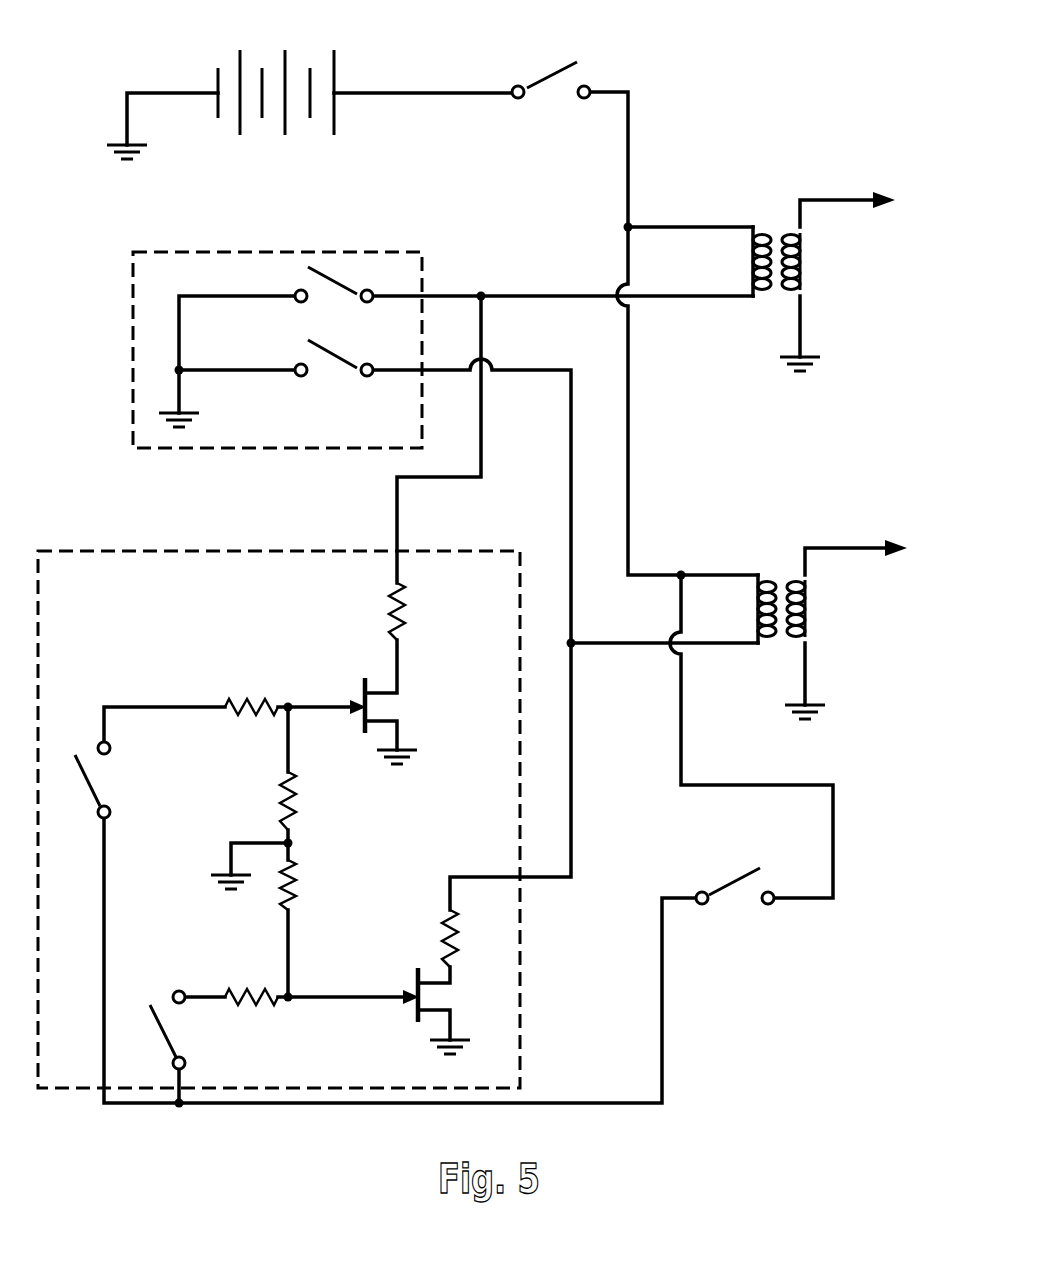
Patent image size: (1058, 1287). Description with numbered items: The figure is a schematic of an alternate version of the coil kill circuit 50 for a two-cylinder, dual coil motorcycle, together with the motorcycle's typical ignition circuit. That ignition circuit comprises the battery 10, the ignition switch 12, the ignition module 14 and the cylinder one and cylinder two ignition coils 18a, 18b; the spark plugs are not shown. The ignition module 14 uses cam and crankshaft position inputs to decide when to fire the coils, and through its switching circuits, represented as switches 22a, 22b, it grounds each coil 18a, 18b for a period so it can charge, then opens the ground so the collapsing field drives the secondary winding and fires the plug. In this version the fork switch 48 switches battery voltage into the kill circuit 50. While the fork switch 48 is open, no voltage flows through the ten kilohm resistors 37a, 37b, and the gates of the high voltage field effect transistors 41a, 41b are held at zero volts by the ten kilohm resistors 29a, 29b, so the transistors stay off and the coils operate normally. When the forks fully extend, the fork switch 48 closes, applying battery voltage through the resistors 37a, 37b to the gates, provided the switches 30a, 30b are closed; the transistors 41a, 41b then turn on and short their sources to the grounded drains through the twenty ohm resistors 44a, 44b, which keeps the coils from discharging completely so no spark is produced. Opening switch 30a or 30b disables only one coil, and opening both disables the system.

The battery 10 is at (285, 50).
The ignition switch 12 is at (560, 89).
The ignition module 14 is at (118, 273).
The switch 22a is at (331, 302).
The switch 22b is at (328, 372).
The cylinder #1 ignition coil 18a is at (802, 251).
The cylinder #2 ignition coil 18b is at (808, 612).
The coil kill circuit 50 is at (118, 536).
The switch 30a is at (113, 753).
The switch 30b is at (190, 1062).
The 10 K ohm resistor 37a is at (253, 700).
The 10 K ohm resistor 37b is at (245, 987).
The 10 K ohm resistor 29a is at (300, 785).
The 10 K ohm resistor 29b is at (298, 880).
The high voltage field effect transistor 41a is at (362, 688).
The high voltage field effect transistor 41b is at (416, 967).
The 20 ohm resistor 44a is at (410, 599).
The 20 ohm resistor 44b is at (445, 918).
The fork switch 48 is at (710, 904).